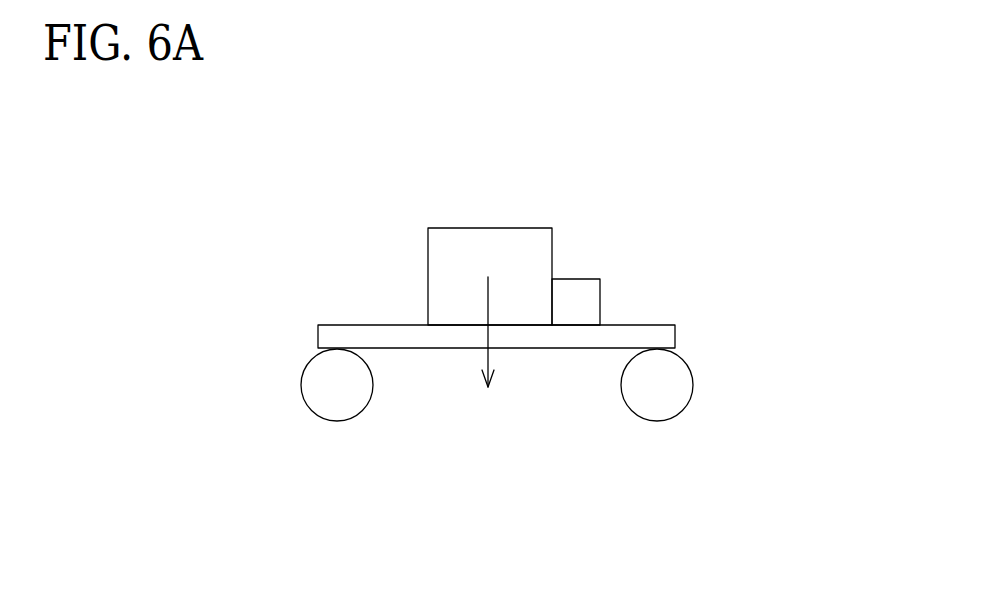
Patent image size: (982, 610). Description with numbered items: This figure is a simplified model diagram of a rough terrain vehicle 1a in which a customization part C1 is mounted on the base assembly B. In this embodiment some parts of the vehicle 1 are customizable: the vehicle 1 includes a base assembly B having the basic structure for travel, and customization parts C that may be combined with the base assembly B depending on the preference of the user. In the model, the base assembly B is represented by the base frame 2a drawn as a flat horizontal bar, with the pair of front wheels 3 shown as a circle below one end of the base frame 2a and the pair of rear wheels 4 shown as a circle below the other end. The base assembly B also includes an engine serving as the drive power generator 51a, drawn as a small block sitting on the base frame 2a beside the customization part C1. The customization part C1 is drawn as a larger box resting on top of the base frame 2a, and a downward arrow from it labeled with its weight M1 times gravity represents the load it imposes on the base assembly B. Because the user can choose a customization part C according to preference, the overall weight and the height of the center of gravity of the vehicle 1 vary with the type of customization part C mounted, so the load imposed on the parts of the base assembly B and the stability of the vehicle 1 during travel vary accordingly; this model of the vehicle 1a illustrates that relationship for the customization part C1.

The vehicle 1 is at (737, 167).
The vehicle 1a is at (559, 290).
The base assembly B is at (337, 321).
The base frame 2a is at (675, 336).
The customization parts C is at (498, 228).
The customization part C1 is at (490, 239).
The drive power generator 51a is at (600, 296).
The front wheels 3 is at (320, 408).
The rear wheels 4 is at (672, 408).